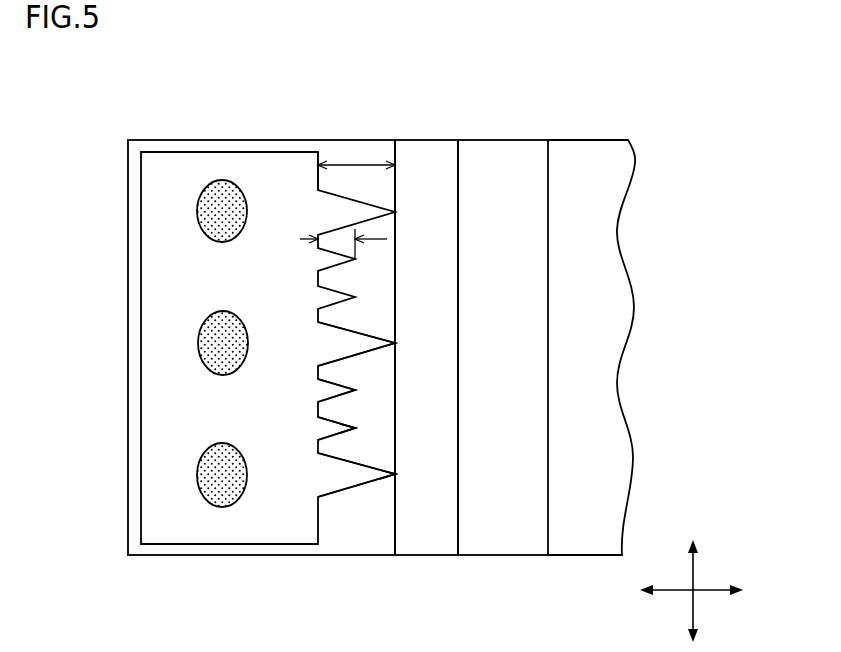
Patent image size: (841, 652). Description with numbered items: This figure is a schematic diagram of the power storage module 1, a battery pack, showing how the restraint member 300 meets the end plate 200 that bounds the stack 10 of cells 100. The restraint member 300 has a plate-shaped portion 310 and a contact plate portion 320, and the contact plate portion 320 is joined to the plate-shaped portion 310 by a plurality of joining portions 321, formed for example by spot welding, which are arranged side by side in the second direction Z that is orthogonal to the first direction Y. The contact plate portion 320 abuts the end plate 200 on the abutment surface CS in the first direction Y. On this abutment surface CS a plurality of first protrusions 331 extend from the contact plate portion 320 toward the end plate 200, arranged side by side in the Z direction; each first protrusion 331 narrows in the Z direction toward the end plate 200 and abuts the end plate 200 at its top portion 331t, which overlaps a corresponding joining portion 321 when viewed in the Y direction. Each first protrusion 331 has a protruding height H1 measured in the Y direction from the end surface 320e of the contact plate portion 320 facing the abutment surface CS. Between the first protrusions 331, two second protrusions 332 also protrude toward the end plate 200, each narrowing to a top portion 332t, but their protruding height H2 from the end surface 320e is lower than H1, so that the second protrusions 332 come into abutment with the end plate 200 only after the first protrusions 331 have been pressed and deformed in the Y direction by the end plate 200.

The power storage module 1 is at (163, 110).
The stack 10 is at (546, 303).
The battery cell 100 is at (505, 165).
The end plate 200 is at (425, 165).
The restraint member 300 is at (261, 303).
The plate-shaped portion 310 is at (230, 148).
The contact plate portion 320 is at (210, 84).
The end surface 320e is at (318, 152).
The joining portion 321 is at (222, 485).
The first protrusion 331 is at (360, 478).
The top portion 331t is at (398, 475).
The second protrusion 332 is at (332, 428).
The top portion 332t is at (358, 429).
The abutment surface CS is at (395, 140).
The protruding height H1 is at (358, 165).
The protruding height H2 is at (383, 243).
The second direction Z is at (690, 572).
The first direction Y is at (710, 590).